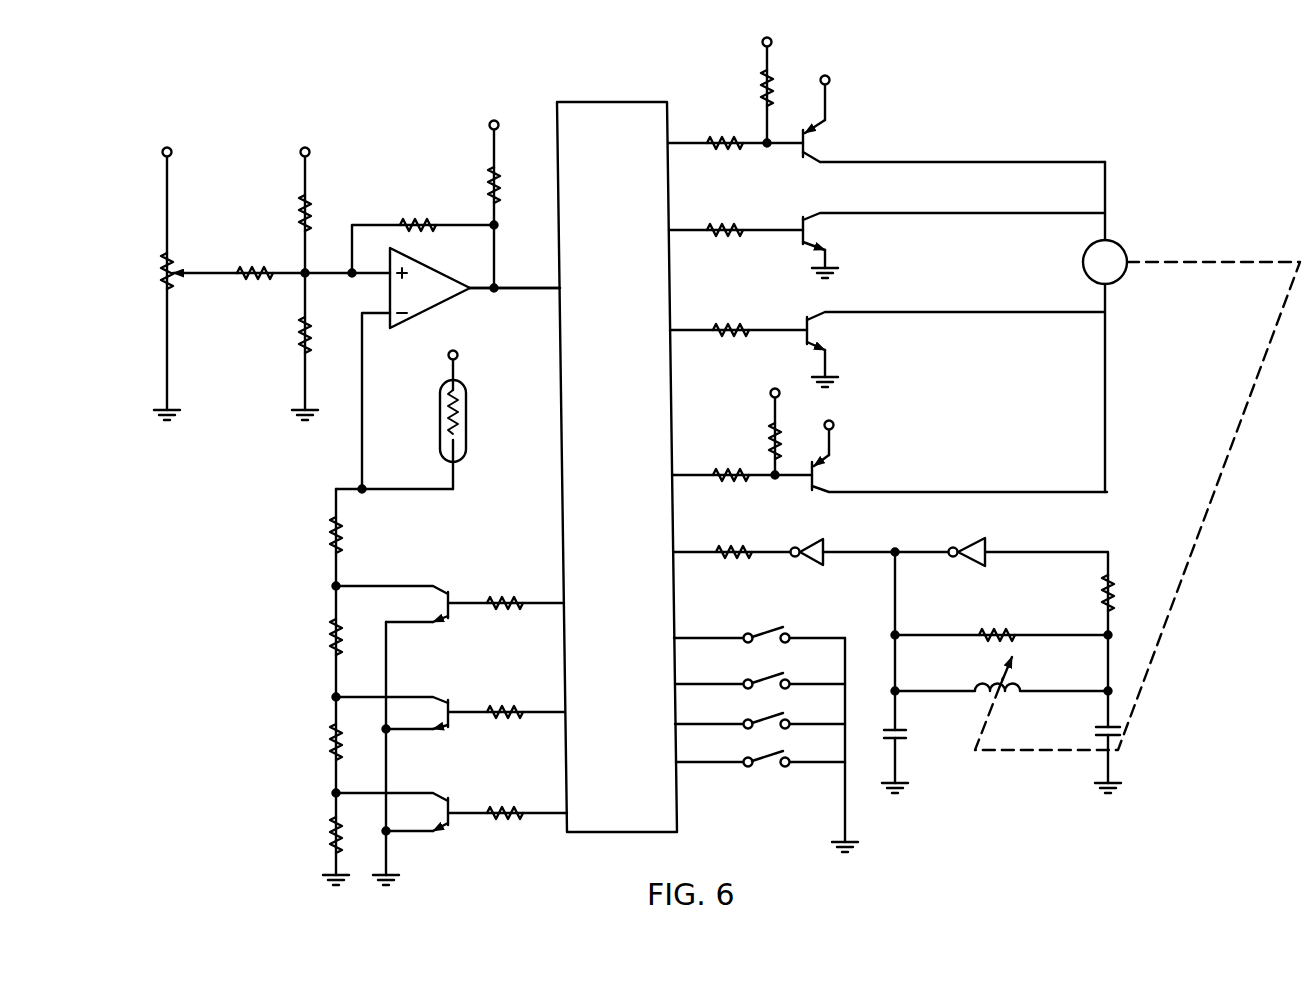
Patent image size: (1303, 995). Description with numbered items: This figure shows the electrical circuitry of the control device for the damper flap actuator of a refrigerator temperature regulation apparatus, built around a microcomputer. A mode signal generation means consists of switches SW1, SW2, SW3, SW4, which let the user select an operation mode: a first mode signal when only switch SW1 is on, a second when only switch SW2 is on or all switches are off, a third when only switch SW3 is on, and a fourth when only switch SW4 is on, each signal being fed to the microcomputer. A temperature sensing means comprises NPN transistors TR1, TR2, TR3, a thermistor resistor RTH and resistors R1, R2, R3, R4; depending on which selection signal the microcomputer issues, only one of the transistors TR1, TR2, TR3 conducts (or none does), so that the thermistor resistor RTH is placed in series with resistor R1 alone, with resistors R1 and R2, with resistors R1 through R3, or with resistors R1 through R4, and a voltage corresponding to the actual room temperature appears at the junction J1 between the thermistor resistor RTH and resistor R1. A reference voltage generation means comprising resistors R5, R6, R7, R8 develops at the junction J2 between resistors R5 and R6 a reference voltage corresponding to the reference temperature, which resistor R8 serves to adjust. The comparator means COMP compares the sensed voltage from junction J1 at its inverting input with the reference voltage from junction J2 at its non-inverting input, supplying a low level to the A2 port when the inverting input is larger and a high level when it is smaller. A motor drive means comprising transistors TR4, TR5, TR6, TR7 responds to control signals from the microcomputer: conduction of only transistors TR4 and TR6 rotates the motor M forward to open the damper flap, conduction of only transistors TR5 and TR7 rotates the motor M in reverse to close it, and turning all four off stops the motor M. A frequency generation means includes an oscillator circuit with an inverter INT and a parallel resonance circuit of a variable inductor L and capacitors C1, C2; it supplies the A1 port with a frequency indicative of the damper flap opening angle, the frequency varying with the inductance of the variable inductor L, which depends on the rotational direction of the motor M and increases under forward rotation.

The resistor R8 is at (179, 284).
The resistor R7 is at (270, 259).
The resistor R5 is at (287, 211).
The resistor R6 is at (290, 346).
The junction J2 is at (347, 294).
The comparator means COMP is at (456, 305).
The thermistor resistor RTH is at (475, 420).
The junction J1 is at (394, 474).
The resistor R1 is at (316, 537).
The resistor R2 is at (316, 641).
The resistor R3 is at (316, 745).
The resistor R4 is at (319, 839).
The NPN transistor TR1 is at (450, 595).
The NPN transistor TR2 is at (450, 704).
The NPN transistor TR3 is at (451, 806).
The A2 port A2 is at (533, 287).
The A1 port A1 is at (714, 552).
The transistor TR4 is at (886, 100).
The transistor TR5 is at (887, 245).
The transistor TR6 is at (887, 349).
The transistor TR7 is at (889, 442).
The motor M is at (1137, 456).
The inverter INT is at (950, 546).
The variable inductor L is at (1001, 672).
The capacitor C1 is at (910, 760).
The capacitor C2 is at (1096, 758).
The switch SW1 is at (760, 748).
The switch SW2 is at (760, 710).
The switch SW3 is at (760, 667).
The switch SW4 is at (759, 620).